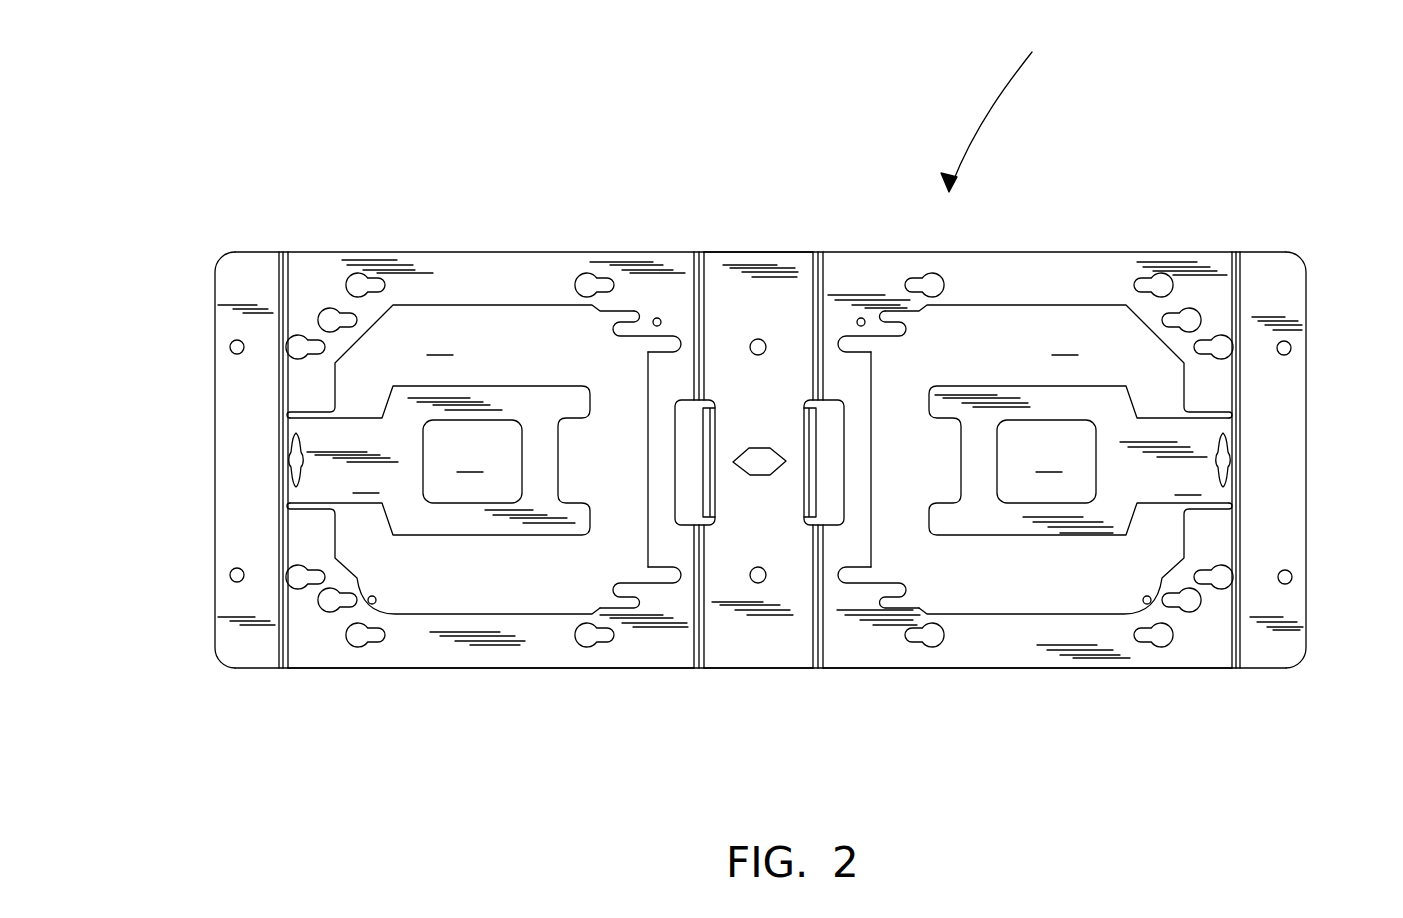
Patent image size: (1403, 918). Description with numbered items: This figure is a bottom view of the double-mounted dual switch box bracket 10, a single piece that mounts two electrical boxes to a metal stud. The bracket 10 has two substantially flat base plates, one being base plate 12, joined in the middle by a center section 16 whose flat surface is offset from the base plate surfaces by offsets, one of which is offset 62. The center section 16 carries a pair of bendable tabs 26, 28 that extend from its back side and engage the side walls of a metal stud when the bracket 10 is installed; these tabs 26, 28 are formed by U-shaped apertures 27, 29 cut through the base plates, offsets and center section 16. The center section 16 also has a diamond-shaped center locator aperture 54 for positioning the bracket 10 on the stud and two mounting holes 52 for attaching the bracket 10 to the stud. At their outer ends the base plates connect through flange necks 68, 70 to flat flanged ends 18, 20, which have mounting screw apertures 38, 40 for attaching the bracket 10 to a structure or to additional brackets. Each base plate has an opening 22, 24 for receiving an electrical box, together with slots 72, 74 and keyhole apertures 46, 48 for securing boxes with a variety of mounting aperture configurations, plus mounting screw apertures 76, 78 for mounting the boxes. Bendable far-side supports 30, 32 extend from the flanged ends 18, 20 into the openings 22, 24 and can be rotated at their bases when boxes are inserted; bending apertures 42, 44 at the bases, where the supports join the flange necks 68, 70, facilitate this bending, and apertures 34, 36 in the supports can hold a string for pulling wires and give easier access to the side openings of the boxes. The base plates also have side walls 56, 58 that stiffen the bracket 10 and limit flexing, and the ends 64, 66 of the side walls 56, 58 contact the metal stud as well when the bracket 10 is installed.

The double-mounted dual switch box bracket 10 is at (1002, 112).
The base plate 12 is at (1038, 287).
The center section 16 is at (760, 669).
The flanged end 18 is at (1283, 488).
The flanged end 20 is at (253, 498).
The opening 22 is at (1058, 459).
The opening 24 is at (460, 459).
The tab 26 is at (817, 451).
The U-shaped aperture 27 is at (823, 424).
The tab 28 is at (703, 453).
The U-shaped aperture 29 is at (690, 433).
The far-side support 30 is at (1079, 460).
The far-side support 32 is at (440, 460).
The aperture 34 is at (1046, 461).
The aperture 36 is at (472, 461).
The mounting screw aperture 38 is at (1287, 345).
The mounting screw aperture 40 is at (229, 350).
The bending aperture 42 is at (1228, 462).
The bending aperture 44 is at (288, 461).
The keyhole aperture 46 is at (1157, 285).
The keyhole aperture 48 is at (361, 285).
The mounting hole 52 is at (755, 341).
The center locator aperture 54 is at (780, 452).
The side wall 56 is at (1072, 669).
The side wall 58 is at (427, 670).
The offset 62 is at (822, 252).
The end of side wall 64 is at (818, 669).
The end of side wall 66 is at (700, 670).
The flange neck 68 is at (1238, 252).
The flange neck 70 is at (278, 252).
The slot 72 is at (871, 350).
The slot 74 is at (600, 325).
The mounting screw aperture 76 is at (861, 318).
The mounting screw aperture 78 is at (657, 318).